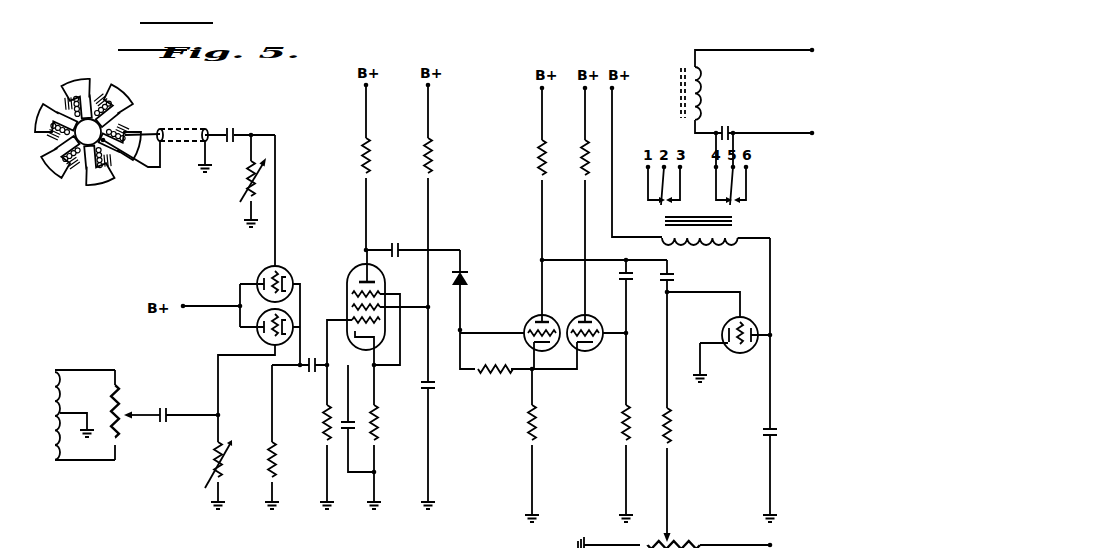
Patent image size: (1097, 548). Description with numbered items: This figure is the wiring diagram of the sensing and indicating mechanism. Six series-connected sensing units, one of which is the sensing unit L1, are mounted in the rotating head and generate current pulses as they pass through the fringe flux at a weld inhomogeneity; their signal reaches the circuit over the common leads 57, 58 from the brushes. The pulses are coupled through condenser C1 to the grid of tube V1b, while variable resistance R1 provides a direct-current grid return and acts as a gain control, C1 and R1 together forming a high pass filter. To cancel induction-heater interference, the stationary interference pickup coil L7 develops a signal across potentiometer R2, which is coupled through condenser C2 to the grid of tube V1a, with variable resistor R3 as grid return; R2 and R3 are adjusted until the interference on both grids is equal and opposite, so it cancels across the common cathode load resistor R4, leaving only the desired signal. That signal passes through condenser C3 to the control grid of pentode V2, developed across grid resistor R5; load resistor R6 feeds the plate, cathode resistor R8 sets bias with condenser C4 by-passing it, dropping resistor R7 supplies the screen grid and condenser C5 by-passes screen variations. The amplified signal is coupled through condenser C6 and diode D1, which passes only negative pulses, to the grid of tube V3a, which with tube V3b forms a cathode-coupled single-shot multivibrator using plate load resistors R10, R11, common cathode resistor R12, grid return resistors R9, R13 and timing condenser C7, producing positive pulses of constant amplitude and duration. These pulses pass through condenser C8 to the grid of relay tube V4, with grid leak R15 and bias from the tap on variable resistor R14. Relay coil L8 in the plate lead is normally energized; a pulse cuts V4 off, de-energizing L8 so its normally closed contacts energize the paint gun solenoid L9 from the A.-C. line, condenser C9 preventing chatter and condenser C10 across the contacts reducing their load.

The sensing unit L1 is at (53, 183).
The common lead 57 is at (160, 128).
The common lead 58 is at (150, 167).
The condenser C1 is at (240, 126).
The variable resistance R1 is at (239, 181).
The triode tube V1a is at (256, 349).
The triode tube V1b is at (258, 250).
The interference pickup coil L7 is at (85, 403).
The potentiometer-type resistor R2 is at (135, 415).
The condenser C2 is at (187, 406).
The variable resistor R3 is at (203, 462).
The common cathode load resistor R4 is at (269, 437).
The condenser C3 is at (311, 375).
The grid resistor R5 is at (313, 437).
The pentode amplifier tube V2 is at (375, 308).
The load resistor R6 is at (347, 166).
The series dropping resistor R7 is at (412, 195).
The condenser C6 is at (413, 242).
The germanium diode D1 is at (471, 291).
The condenser C5 is at (412, 408).
The cathode resistor R8 is at (385, 437).
The condenser C4 is at (356, 432).
The direct-current grid return resistor R9 is at (518, 363).
The triode tube V3a is at (510, 313).
The triode tube V3b is at (597, 305).
The plate load resistor R10 is at (521, 173).
The plate load resistor R11 is at (570, 173).
The cathode resistor R12 is at (514, 445).
The condenser C7 is at (612, 295).
The direct-current grid return resistor R13 is at (610, 427).
The condenser C8 is at (681, 277).
The grid leak resistor R15 is at (685, 417).
The variable resistor R14 is at (690, 533).
The relay tube V4 is at (719, 337).
The condenser C9 is at (783, 380).
The relay coil L8 is at (716, 240).
The solenoid L9 is at (736, 92).
The condenser C10 is at (765, 123).